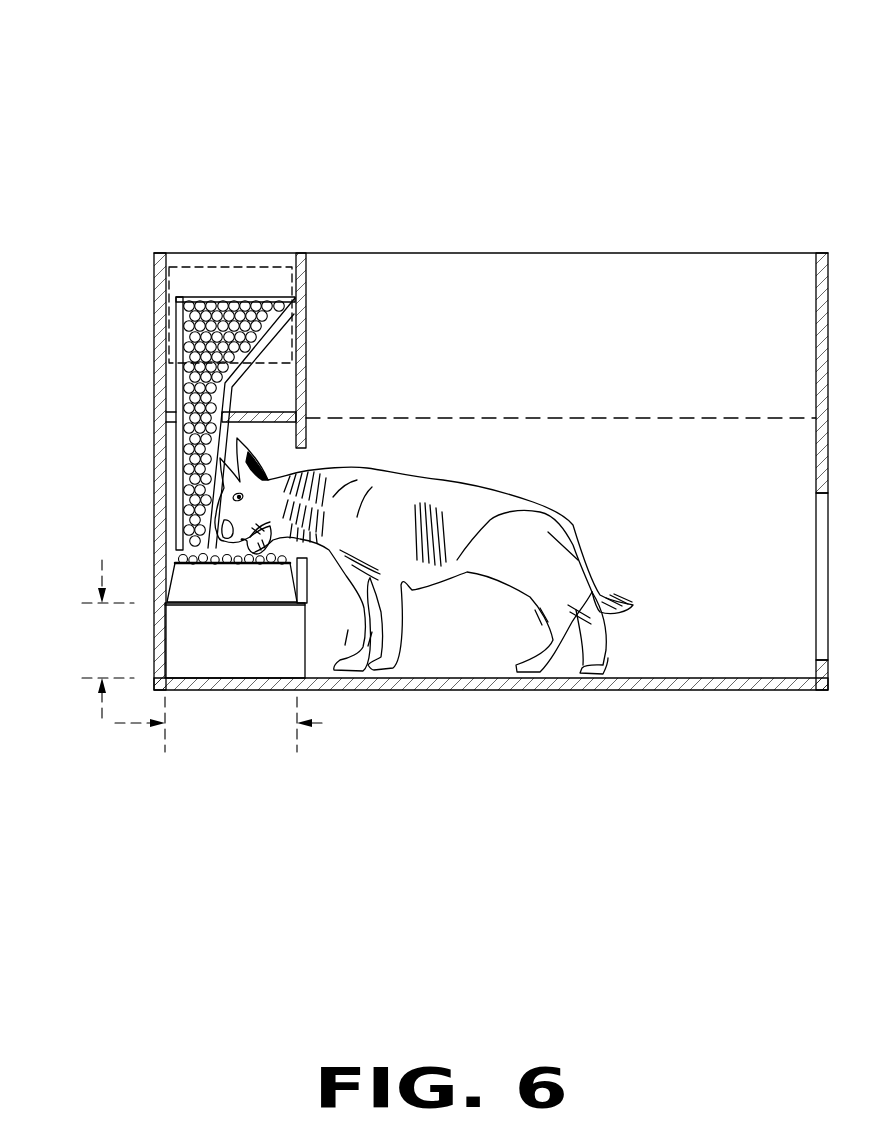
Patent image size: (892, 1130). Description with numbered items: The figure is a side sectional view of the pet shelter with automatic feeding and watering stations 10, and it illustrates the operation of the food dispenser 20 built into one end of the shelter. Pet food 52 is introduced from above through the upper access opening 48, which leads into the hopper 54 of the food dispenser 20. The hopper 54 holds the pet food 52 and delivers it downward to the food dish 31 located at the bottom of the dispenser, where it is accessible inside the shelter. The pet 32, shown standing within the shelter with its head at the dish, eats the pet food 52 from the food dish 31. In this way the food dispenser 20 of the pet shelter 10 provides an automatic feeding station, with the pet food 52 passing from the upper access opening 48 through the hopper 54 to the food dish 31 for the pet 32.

The pet shelter with automatic feeding and watering stations 10 is at (670, 104).
The food dispenser 20 is at (247, 288).
The food dish 31 is at (178, 577).
The pet 32 is at (548, 527).
The upper access opening 48 is at (181, 268).
The pet food 52 is at (204, 390).
The hopper 54 is at (178, 390).